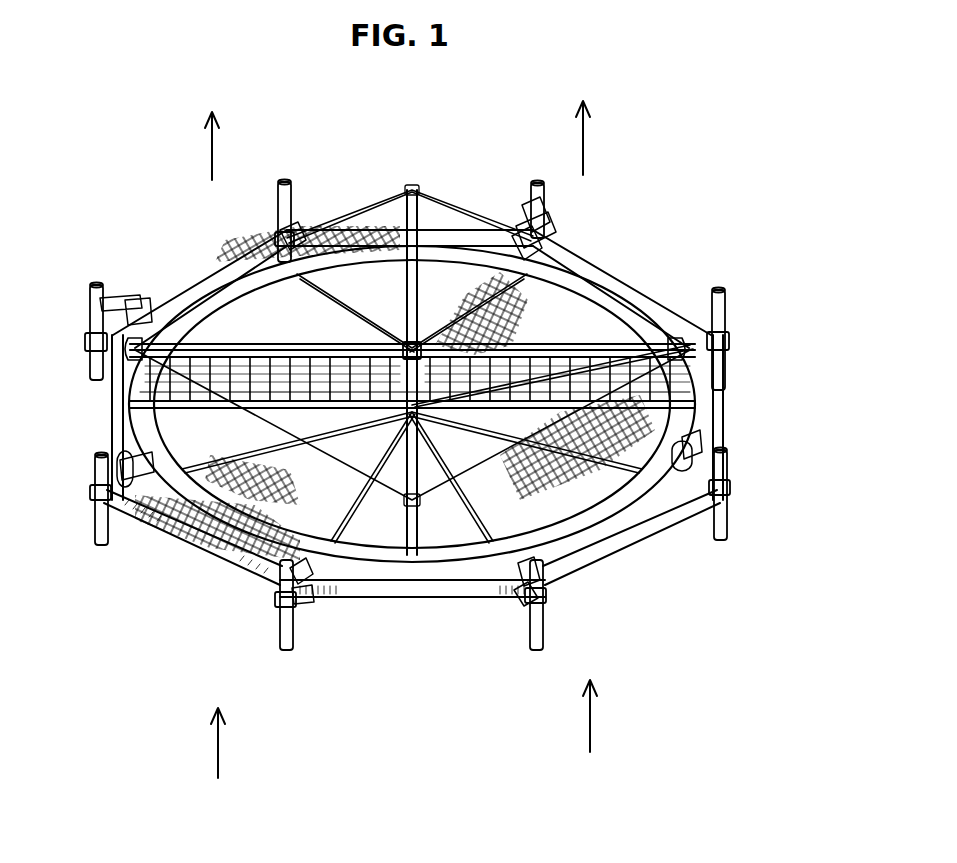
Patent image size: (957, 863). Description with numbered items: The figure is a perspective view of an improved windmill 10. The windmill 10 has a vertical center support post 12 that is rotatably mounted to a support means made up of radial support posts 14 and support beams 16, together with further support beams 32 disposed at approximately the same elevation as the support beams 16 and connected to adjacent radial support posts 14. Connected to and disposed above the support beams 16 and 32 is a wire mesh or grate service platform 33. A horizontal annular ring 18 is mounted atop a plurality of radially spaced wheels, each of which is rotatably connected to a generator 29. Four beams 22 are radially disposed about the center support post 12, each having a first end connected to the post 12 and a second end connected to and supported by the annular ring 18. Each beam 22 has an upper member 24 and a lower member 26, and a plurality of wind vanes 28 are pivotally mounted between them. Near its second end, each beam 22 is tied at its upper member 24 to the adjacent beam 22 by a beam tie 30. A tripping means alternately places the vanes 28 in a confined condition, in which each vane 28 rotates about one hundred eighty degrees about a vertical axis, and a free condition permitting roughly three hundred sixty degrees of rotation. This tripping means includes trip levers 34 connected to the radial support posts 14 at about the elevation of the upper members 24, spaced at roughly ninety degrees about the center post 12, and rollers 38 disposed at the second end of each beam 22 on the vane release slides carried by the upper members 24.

The windmill 10 is at (656, 210).
The vertical center support post 12 is at (405, 345).
The radial support posts 14 is at (725, 300).
The support beams 16 is at (470, 335).
The horizontal annular ring 18 is at (612, 497).
The beams 22 is at (180, 407).
The upper member 24 is at (233, 345).
The lower member 26 is at (222, 408).
The wind vanes 28 is at (322, 378).
The generator 29 is at (290, 235).
The beam tie 30 is at (385, 205).
The support beams 32 is at (110, 400).
The wire mesh or grate service platform 33 is at (560, 467).
The trip lever 34 is at (135, 300).
The rollers 38 is at (412, 188).